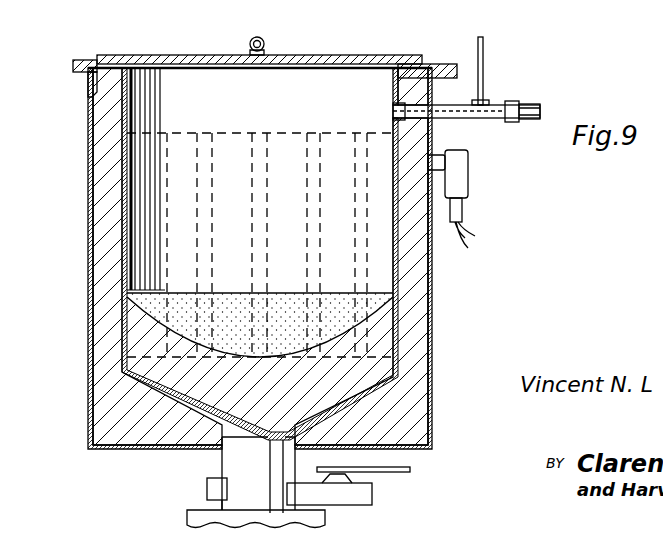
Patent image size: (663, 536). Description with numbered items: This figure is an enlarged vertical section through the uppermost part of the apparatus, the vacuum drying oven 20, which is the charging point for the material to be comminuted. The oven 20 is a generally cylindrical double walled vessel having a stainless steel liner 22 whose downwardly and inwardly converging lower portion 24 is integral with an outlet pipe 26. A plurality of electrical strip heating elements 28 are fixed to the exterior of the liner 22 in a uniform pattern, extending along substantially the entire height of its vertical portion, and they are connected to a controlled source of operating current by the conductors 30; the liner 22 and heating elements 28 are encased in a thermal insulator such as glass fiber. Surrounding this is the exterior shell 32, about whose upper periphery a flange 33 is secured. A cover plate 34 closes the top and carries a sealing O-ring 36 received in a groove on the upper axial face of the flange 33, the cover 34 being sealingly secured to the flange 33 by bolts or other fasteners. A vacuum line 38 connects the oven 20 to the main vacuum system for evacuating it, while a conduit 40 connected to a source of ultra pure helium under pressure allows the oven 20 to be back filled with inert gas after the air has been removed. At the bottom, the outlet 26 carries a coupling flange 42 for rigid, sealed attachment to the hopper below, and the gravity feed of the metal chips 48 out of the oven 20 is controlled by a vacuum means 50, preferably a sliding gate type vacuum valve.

The vacuum drying oven 20 is at (437, 305).
The stainless steel liner 22 is at (385, 378).
The lower portion 24 is at (343, 407).
The outlet pipe 26 is at (235, 462).
The heating elements 28 is at (316, 147).
The conductors 30 is at (462, 235).
The exterior shell 32 is at (430, 333).
The flange 33 is at (78, 70).
The cover plate 34 is at (310, 62).
The sealing O-ring 36 is at (437, 68).
The vacuum line 38 is at (497, 108).
The conduit 40 is at (483, 50).
The coupling flange 42 is at (195, 515).
The metal chips 48 is at (298, 330).
The vacuum means 50 is at (370, 490).